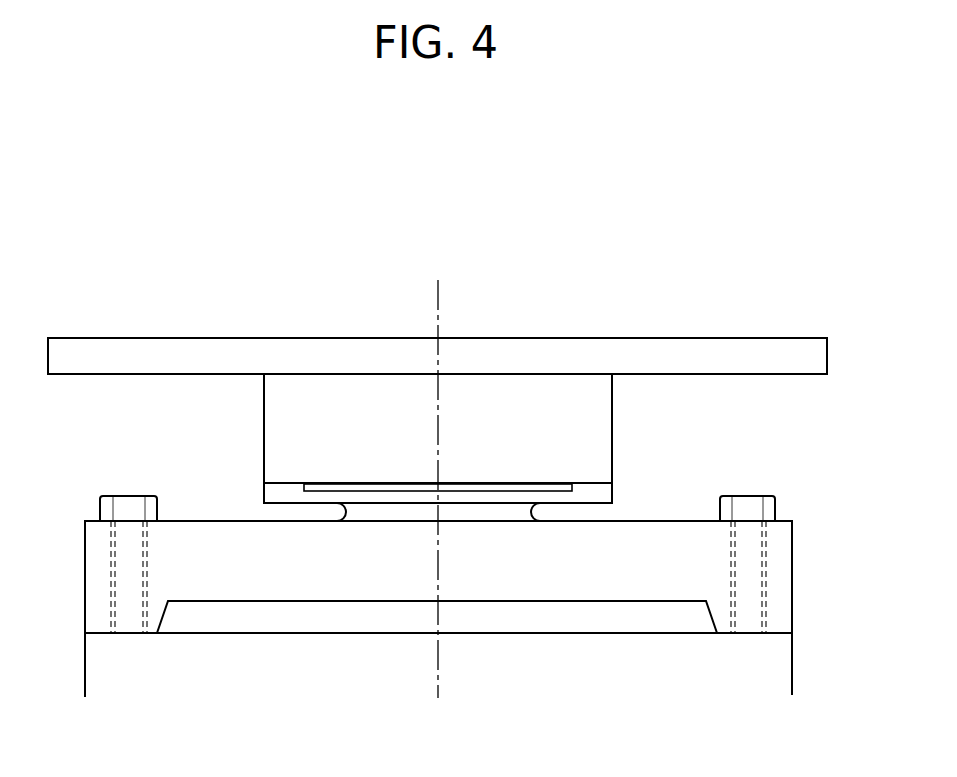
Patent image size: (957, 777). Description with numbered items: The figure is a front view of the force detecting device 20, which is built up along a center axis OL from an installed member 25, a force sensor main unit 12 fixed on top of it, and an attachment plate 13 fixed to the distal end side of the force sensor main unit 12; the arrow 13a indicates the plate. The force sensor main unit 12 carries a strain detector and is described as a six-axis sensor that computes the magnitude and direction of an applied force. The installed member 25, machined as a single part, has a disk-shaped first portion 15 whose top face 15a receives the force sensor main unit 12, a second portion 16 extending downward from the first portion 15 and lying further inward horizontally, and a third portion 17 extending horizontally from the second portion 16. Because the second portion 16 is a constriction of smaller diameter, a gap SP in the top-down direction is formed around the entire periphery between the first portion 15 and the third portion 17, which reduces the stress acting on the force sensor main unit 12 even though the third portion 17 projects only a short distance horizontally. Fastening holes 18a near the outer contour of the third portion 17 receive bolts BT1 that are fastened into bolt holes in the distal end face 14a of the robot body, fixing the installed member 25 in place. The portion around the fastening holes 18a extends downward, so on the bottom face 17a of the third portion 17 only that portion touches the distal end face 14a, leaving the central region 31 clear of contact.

The force detecting device 20 is at (824, 160).
The attachment plate 13 is at (827, 356).
The upper surface of plate 13a is at (679, 318).
The center axis OL is at (441, 472).
The force sensor main unit 12 is at (612, 402).
The first portion 15 is at (612, 493).
The top face 15a is at (283, 469).
The second portion 16 is at (540, 512).
The gap SP is at (321, 513).
The third portion 17 is at (792, 575).
The recess 31 is at (663, 577).
The bottom face 17a is at (590, 622).
The distal end face 14a is at (367, 607).
The bolt BT1 is at (123, 502).
The fastening hole 18a is at (112, 614).
The installed member 25 is at (860, 483).